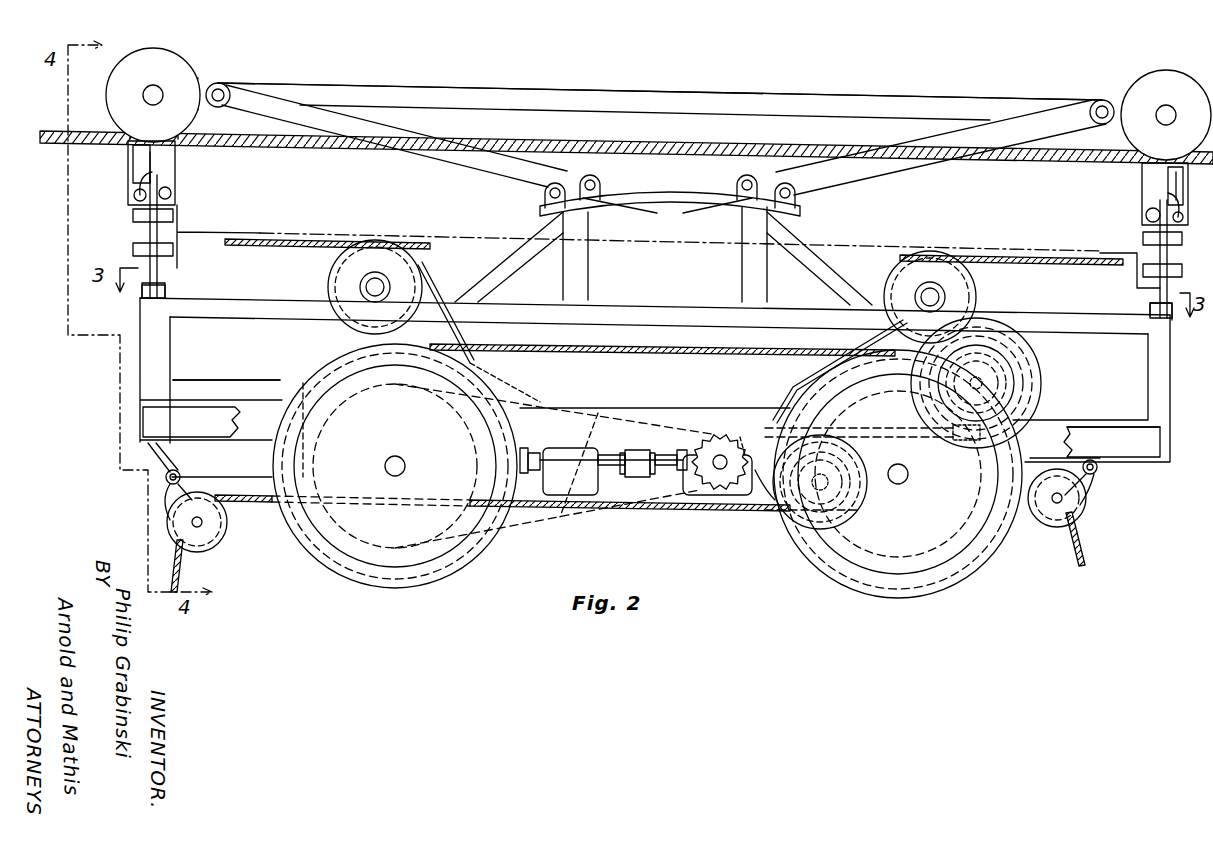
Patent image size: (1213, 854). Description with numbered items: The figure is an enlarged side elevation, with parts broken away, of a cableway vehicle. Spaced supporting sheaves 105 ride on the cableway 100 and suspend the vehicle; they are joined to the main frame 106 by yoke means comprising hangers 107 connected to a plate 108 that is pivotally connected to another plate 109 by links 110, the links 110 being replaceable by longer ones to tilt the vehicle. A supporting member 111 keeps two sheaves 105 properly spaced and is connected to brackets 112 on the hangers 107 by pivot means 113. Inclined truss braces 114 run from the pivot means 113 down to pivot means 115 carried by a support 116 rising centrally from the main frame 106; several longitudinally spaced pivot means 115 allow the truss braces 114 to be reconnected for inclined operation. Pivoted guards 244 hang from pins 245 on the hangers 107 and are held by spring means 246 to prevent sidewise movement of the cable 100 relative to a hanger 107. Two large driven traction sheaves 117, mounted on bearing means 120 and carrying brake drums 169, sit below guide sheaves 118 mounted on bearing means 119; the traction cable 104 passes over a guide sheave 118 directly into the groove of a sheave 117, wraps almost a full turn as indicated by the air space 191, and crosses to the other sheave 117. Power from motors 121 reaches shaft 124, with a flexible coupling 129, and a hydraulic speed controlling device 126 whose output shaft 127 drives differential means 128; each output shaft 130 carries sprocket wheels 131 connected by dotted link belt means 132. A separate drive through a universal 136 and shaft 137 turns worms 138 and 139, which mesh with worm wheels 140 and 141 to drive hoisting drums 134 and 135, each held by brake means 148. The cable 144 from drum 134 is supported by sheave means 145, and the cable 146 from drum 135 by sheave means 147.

The cableway 100 is at (728, 154).
The traction cable 104 is at (290, 249).
The supporting sheaves 105 is at (185, 72).
The main frame 106 is at (168, 350).
The hangers 107 is at (178, 150).
The plate 108 is at (134, 216).
The plate 109 is at (158, 277).
The links 110 is at (152, 240).
The supporting members 111 is at (754, 98).
The brackets 112 is at (228, 78).
The pivot means 113 is at (230, 90).
The inclined truss braces 114 is at (524, 174).
The pivot means 115 is at (730, 206).
The support 116 is at (680, 194).
The driven traction sheaves 117 is at (325, 556).
The guide sheaves 118 is at (330, 285).
The bearing and supporting means 119 is at (376, 286).
The supporting and bearing means 120 is at (400, 458).
The motors 121 is at (272, 372).
The shaft 124 is at (550, 458).
The hydraulic speed controlling device 126 is at (578, 496).
The shaft 127 is at (605, 468).
The differential means 128 is at (705, 505).
The universal or flexible couplings 129 is at (638, 480).
The output shafts 130 is at (720, 456).
The sprocket wheels 131 is at (728, 497).
The link belt means 132 is at (770, 400).
The hoisting drum 134 is at (776, 505).
The hoisting drum 135 is at (1036, 400).
The universal 136 is at (742, 432).
The shaft 137 is at (643, 440).
The worm 138 is at (838, 424).
The worm 139 is at (960, 441).
The worm wheel 140 is at (868, 463).
The worm wheel 141 is at (1038, 378).
The cable 144 is at (258, 505).
The sheave means 145 is at (214, 535).
The cable 146 is at (1075, 540).
The sheave means 147 is at (1072, 512).
The brake means 148 is at (1036, 362).
The brake drums 169 is at (437, 556).
The air space 191 is at (835, 346).
The pivoted guards 244 is at (133, 160).
The pins 245 is at (138, 196).
The spring means 246 is at (150, 177).